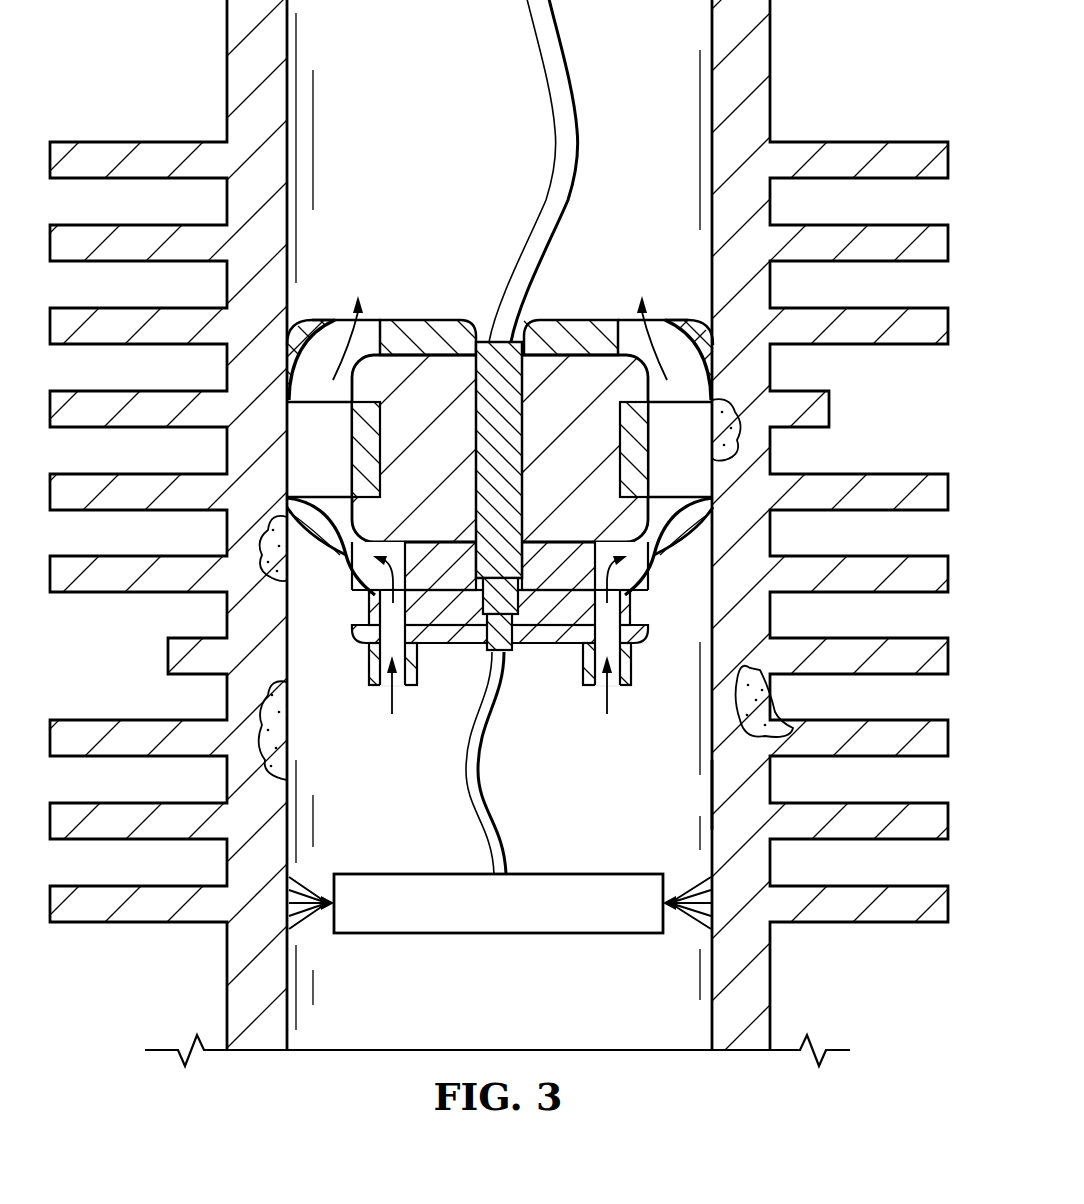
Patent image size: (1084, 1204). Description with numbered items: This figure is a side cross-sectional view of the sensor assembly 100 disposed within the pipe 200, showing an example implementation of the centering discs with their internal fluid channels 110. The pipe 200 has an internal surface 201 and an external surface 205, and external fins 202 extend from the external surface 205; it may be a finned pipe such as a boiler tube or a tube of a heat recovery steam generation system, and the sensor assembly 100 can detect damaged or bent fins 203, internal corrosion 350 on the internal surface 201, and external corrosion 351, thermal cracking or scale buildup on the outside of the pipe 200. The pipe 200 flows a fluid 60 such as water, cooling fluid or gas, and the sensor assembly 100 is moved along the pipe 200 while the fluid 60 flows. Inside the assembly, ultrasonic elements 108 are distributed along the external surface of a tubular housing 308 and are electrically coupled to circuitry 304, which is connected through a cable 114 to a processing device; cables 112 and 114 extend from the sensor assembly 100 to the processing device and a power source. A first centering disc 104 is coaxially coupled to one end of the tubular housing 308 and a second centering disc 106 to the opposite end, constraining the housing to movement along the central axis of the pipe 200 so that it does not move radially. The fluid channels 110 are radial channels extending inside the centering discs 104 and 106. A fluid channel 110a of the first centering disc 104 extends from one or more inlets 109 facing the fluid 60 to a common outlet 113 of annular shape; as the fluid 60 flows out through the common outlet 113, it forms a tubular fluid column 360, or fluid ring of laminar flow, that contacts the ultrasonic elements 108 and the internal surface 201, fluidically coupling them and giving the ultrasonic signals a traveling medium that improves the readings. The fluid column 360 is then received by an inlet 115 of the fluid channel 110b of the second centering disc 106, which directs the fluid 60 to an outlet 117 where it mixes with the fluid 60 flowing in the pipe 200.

The sensor assembly 100 is at (488, 437).
The pipe 200 is at (499, 525).
The internal surface 201 is at (711, 790).
The external fins 202 is at (916, 153).
The damaged fins 203 is at (822, 412).
The external surface 205 is at (772, 108).
The internal corrosion 350 is at (724, 425).
The external corrosion 351 is at (765, 688).
The fluid 60 is at (452, 136).
The tubular fluid column 360 is at (701, 463).
The second centering disc 106 is at (574, 335).
The ultrasonic elements 108 is at (619, 444).
The circuitry 304 is at (485, 392).
The tubular housing 308 is at (460, 488).
The fluid channels 110 is at (372, 327).
The fluid channel 110a is at (348, 556).
The fluid channel 110b is at (663, 352).
The common outlet 113 is at (288, 500).
The inlet 115 is at (292, 404).
The first centering disc 104 is at (714, 548).
The outlet 117 is at (623, 322).
The inlets 109 is at (399, 688).
The cable 112 is at (469, 783).
The cable 114 is at (588, 94).